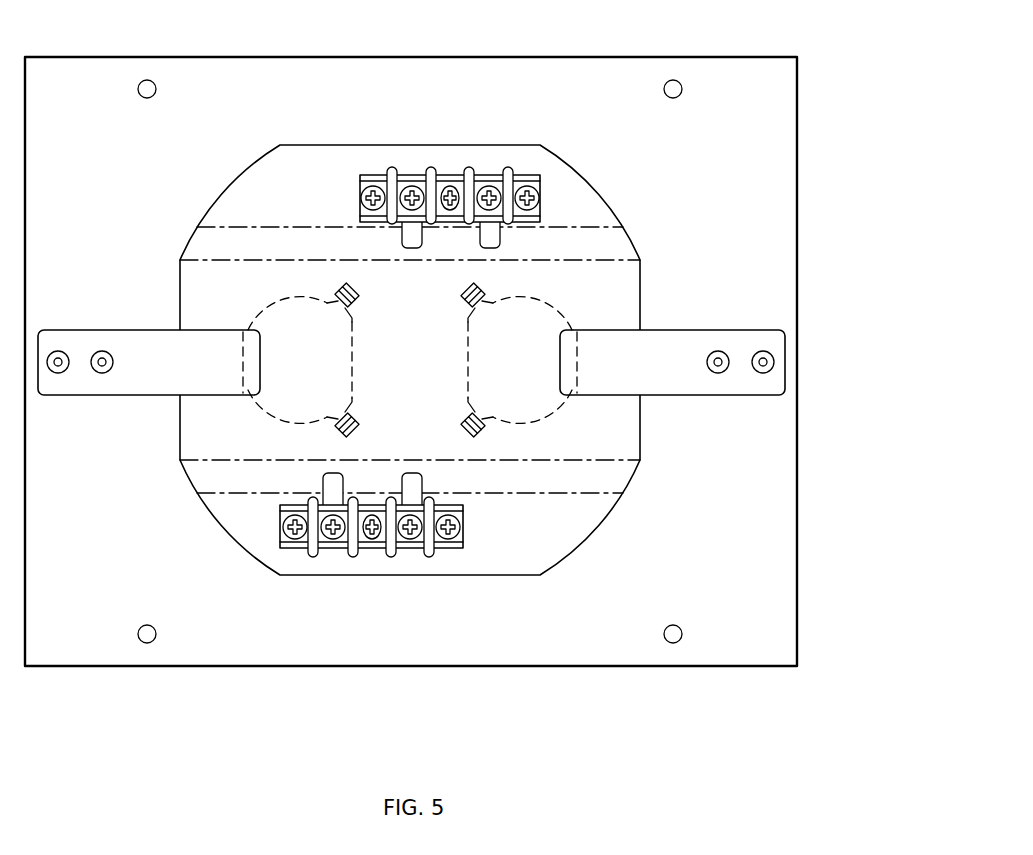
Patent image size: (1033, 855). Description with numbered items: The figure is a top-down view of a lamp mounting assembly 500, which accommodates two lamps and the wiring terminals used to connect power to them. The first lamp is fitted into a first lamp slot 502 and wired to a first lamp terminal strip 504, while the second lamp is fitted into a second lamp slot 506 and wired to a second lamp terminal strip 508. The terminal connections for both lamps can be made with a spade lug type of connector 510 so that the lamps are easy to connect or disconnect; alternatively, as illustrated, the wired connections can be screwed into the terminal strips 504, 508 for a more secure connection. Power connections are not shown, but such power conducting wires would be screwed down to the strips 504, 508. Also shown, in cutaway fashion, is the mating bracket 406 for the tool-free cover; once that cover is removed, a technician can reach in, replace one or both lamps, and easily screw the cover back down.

The lamp mounting assembly 500 is at (797, 78).
The first lamp slot 502 is at (565, 311).
The first lamp terminal strip 504 is at (540, 186).
The second lamp slot 506 is at (352, 371).
The second lamp terminal strip 508 is at (283, 546).
The spade lug type of connector 510 is at (477, 248).
The mating bracket 406 is at (773, 344).